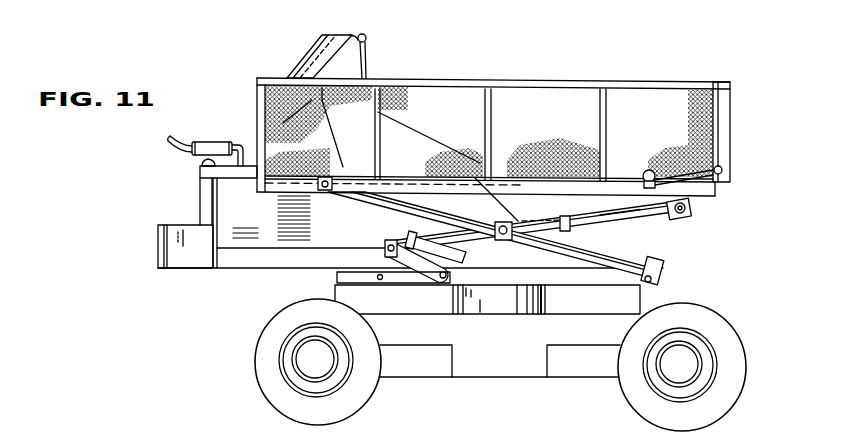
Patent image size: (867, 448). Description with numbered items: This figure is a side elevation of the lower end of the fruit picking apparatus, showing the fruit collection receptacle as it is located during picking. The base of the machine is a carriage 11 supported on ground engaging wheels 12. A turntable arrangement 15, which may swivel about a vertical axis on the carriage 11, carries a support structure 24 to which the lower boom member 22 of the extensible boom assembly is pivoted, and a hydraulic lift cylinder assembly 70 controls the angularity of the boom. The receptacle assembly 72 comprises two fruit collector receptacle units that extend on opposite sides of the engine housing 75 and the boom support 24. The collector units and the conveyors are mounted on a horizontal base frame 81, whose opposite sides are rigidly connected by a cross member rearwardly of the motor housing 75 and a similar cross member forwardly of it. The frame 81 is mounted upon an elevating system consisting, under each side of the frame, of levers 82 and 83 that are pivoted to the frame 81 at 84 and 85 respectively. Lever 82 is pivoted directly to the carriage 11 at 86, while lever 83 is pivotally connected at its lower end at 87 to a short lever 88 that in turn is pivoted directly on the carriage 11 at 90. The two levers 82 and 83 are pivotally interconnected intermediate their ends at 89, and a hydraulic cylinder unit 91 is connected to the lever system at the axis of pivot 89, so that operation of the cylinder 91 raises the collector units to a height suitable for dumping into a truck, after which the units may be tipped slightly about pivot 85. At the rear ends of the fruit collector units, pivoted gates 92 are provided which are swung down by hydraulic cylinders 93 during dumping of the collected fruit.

The carriage 11 is at (508, 352).
The ground engaging wheels 12 is at (373, 383).
The turntable arrangement 15 is at (558, 295).
The boom member 22 is at (322, 47).
The support structure 24 is at (403, 118).
The hydraulic lift cylinder assembly 70 is at (370, 53).
The receptacle assembly 72 is at (560, 70).
The engine housing 75 is at (230, 198).
The horizontal base frame 81 is at (610, 190).
The lever 82 is at (398, 203).
The lever 83 is at (643, 205).
The pivot 84 is at (330, 192).
The pivot 85 is at (690, 213).
The pivot 86 is at (663, 273).
The pivot 87 is at (390, 242).
The short lever 88 is at (402, 273).
The pivot 89 is at (505, 241).
The pivot 90 is at (437, 284).
The hydraulic cylinder unit 91 is at (462, 268).
The pivoted gates 92 is at (723, 128).
The hydraulic cylinders 93 is at (680, 170).